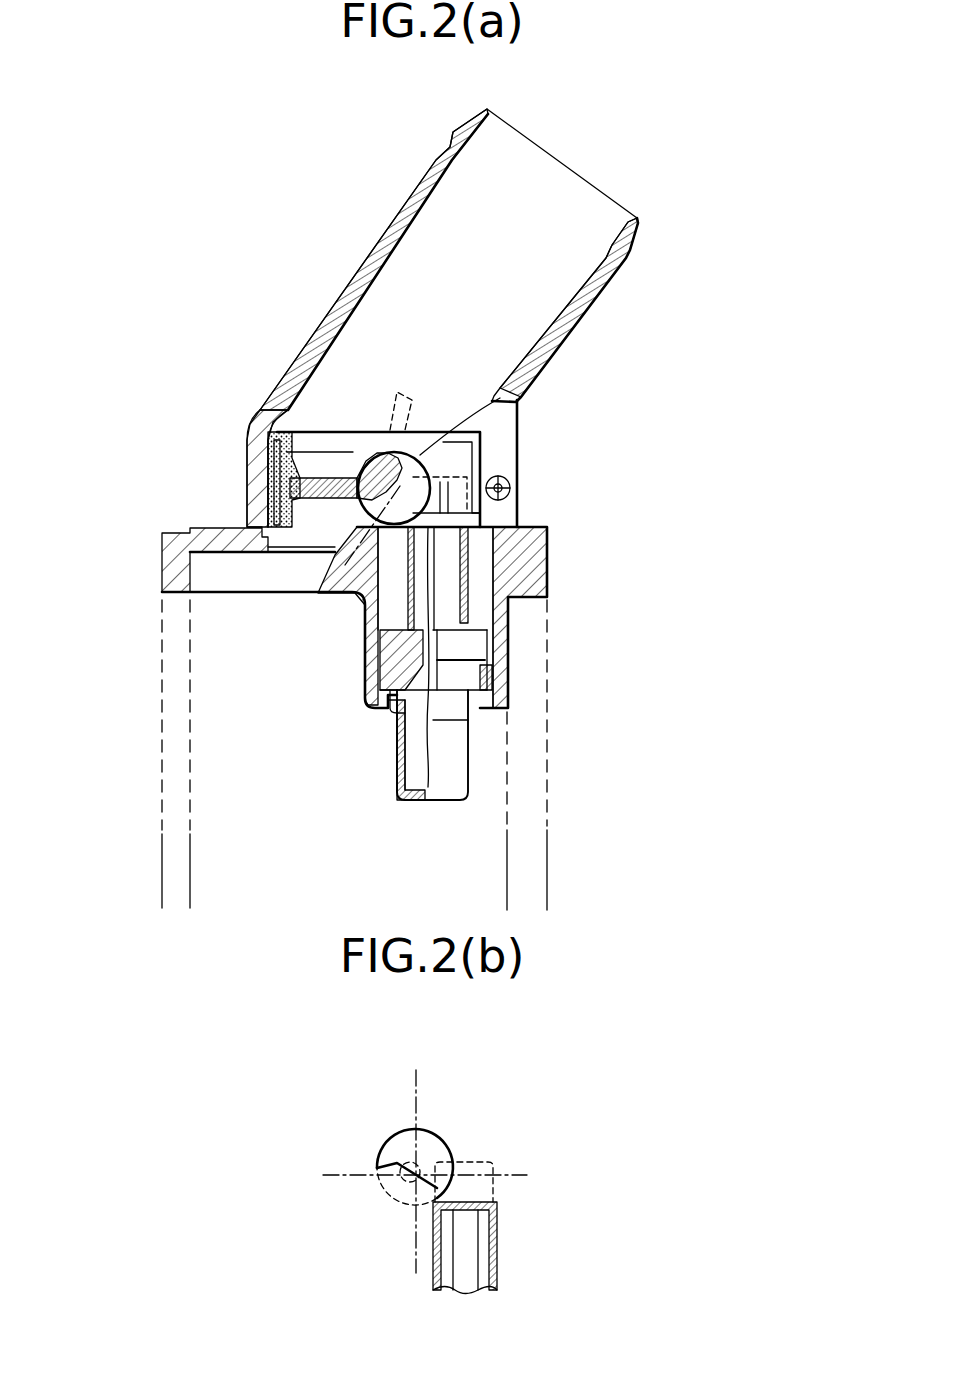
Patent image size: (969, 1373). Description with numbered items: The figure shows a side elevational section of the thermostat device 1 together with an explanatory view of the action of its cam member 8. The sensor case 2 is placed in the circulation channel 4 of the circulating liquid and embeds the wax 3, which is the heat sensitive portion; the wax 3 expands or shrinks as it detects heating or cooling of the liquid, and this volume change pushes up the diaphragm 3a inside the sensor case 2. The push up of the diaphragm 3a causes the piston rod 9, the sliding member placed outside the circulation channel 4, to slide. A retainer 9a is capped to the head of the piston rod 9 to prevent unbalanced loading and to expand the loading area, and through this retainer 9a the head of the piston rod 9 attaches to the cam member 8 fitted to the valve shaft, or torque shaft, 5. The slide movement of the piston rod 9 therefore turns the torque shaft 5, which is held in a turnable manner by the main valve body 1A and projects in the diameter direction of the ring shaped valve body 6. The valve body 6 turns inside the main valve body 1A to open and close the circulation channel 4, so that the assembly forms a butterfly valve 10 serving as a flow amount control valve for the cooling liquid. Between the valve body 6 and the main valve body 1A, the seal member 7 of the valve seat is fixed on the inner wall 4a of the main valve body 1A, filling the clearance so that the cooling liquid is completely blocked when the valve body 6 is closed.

In FIG. 2A, the thermostat device 1 is at (524, 675).
In FIG. 2A, the main valve body 1A is at (483, 433).
In FIG. 2A, the sensor case 2 is at (397, 735).
In FIG. 2A, the wax 3 is at (412, 762).
In FIG. 2A, the diaphragm 3a is at (390, 708).
In FIG. 2A, the circulation channel 4 is at (640, 242).
In FIG. 2A, the inner wall 4a is at (292, 415).
In FIG. 2A, the valve shaft (torque shaft) 5 is at (345, 565).
In FIG. 2B, the valve shaft (torque shaft) 5 is at (400, 1183).
In FIG. 2A, the valve body 6 is at (330, 477).
In FIG. 2A, the seal member 7 is at (280, 470).
In FIG. 2A, the cam member 8 is at (418, 458).
In FIG. 2B, the cam member 8 is at (428, 1143).
In FIG. 2A, the piston rod 9 is at (432, 565).
In FIG. 2B, the piston rod 9 is at (460, 1280).
In FIG. 2A, the retainer 9a is at (457, 517).
In FIG. 2B, the retainer 9a is at (497, 1238).
In FIG. 2A, the butterfly valve 10 is at (350, 460).